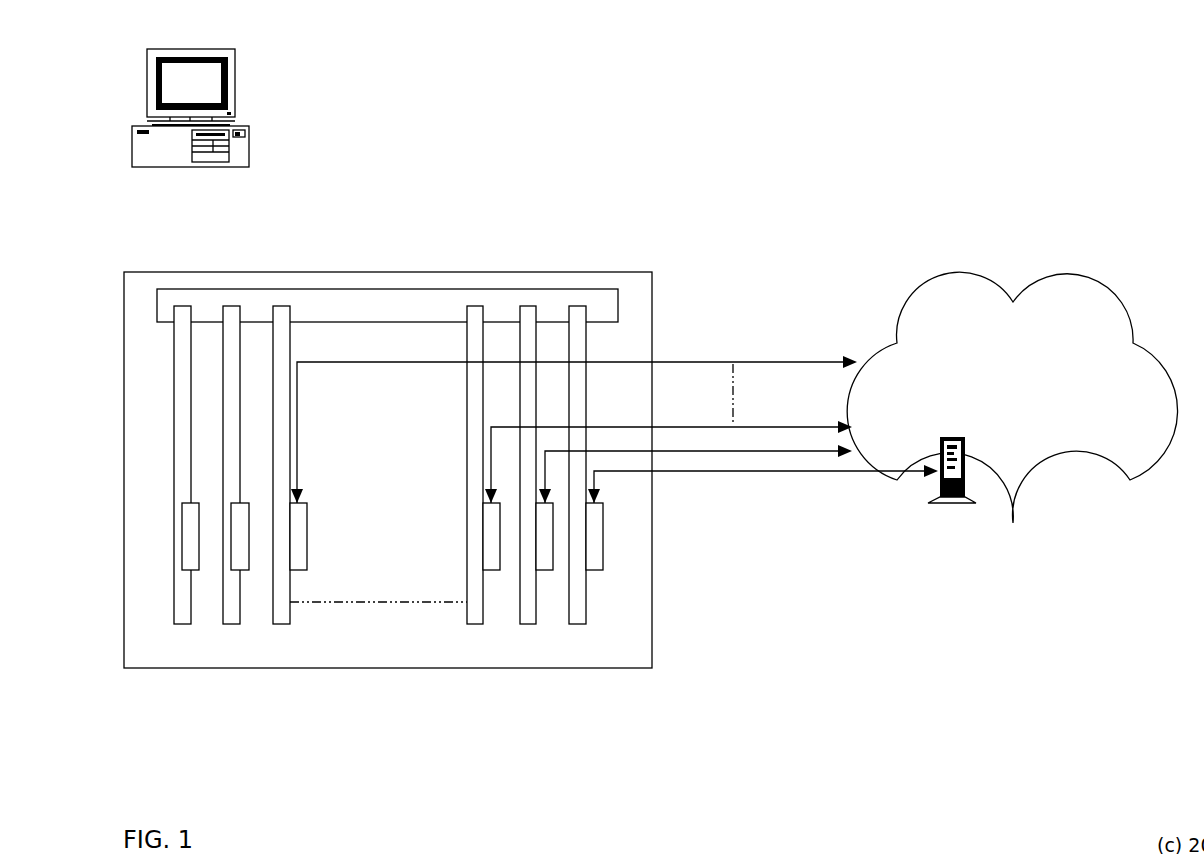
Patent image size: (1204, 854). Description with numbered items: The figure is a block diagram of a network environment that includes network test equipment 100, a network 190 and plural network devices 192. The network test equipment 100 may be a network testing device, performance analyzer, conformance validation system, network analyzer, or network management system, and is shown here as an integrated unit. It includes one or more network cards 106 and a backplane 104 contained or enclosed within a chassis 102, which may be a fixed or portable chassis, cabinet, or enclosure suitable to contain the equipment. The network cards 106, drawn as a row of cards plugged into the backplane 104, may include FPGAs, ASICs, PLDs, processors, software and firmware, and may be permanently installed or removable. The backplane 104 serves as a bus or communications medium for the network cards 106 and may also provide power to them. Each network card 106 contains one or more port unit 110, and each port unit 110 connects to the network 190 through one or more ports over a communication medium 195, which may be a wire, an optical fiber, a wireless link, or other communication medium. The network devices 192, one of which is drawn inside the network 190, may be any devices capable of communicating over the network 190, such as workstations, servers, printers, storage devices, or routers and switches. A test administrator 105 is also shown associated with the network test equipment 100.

The network test equipment 100 is at (590, 68).
The chassis 102 is at (505, 270).
The backplane 104 is at (572, 289).
The Test administrator 105 is at (388, 258).
The network cards 106 is at (597, 683).
The port unit 110 is at (603, 572).
The network 190 is at (1012, 397).
The network devices 192 is at (965, 471).
The communication medium 195 is at (718, 472).